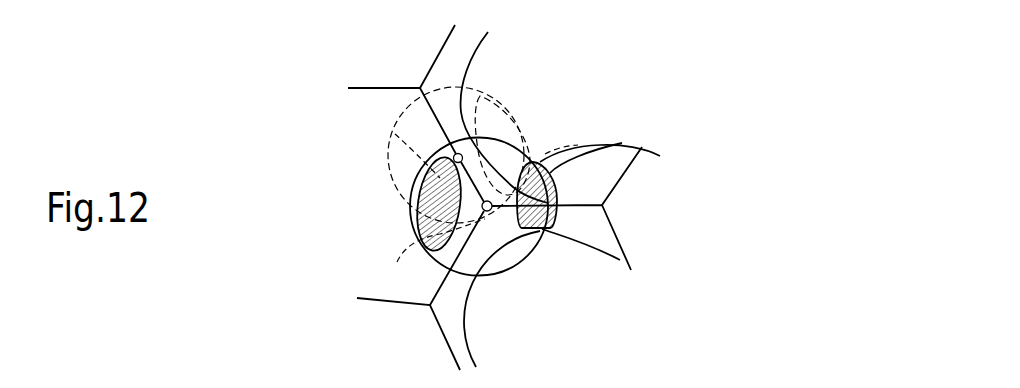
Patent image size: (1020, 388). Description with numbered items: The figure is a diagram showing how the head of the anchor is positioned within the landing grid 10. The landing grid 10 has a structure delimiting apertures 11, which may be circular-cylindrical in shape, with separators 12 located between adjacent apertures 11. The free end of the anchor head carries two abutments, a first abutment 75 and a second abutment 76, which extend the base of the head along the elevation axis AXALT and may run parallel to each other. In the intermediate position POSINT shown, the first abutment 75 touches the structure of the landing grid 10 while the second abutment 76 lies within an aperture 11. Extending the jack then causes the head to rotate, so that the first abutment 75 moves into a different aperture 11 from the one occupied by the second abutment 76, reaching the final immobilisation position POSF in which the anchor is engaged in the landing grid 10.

The landing grid 10 is at (650, 246).
The aperture 11 is at (555, 88).
The separator 12 is at (466, 93).
The first abutment 75 is at (660, 156).
The second abutment 76 is at (437, 250).
The final immobilisation position POSF is at (407, 163).
The intermediate position POSINT is at (560, 192).
The elevation axis AXALT is at (481, 207).